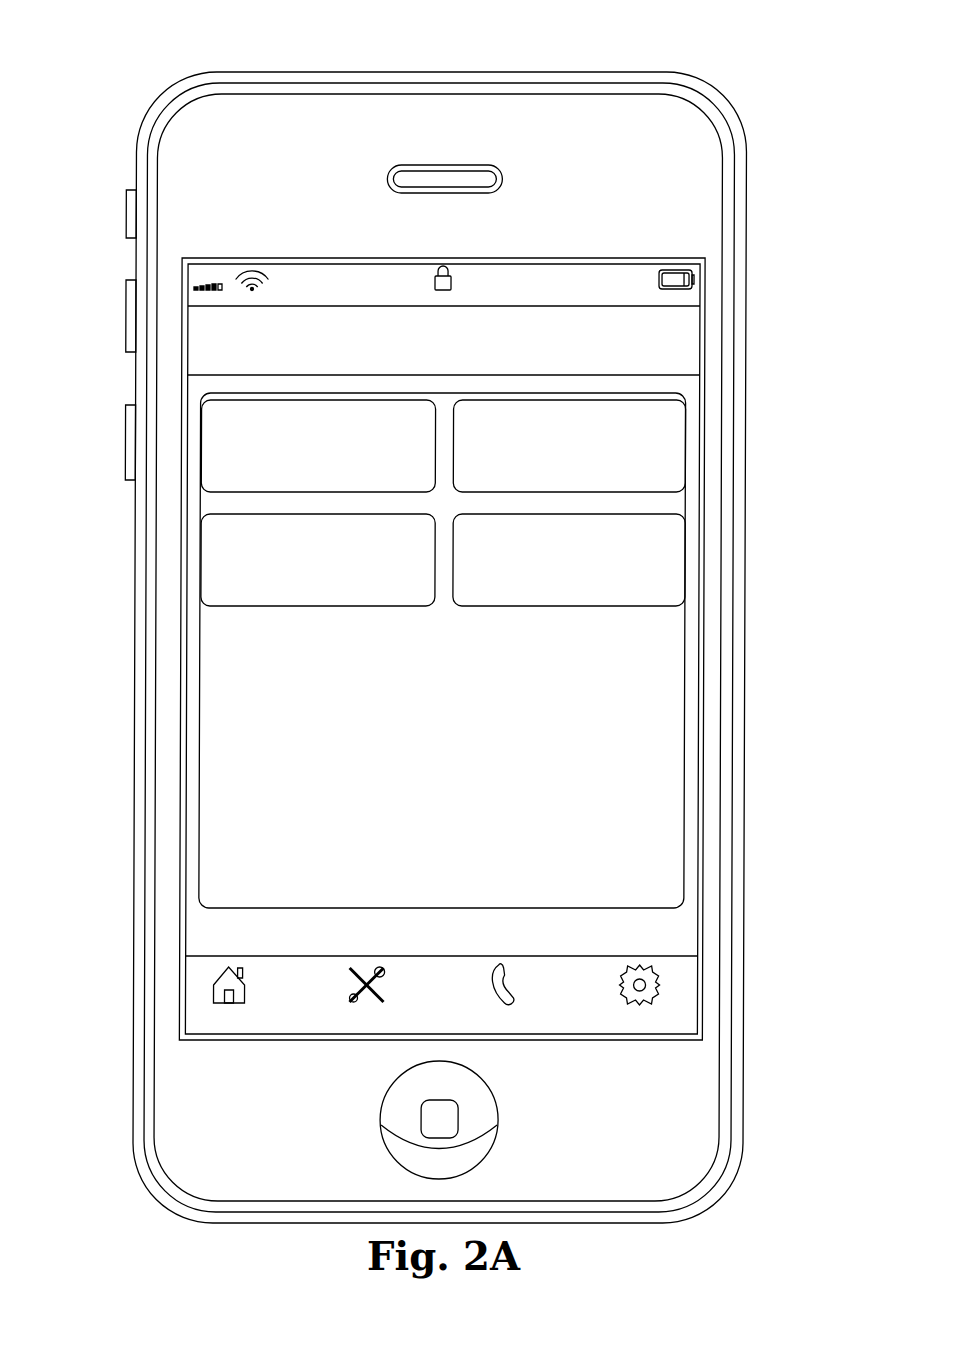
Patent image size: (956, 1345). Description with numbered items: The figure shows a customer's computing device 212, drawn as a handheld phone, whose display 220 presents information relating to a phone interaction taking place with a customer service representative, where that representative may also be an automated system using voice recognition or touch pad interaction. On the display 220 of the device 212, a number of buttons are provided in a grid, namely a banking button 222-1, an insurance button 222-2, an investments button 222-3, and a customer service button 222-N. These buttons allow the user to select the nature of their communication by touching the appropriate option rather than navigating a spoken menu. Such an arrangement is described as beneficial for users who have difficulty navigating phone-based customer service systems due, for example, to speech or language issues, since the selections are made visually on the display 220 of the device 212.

The customer's computing device 212 is at (165, 74).
The display 220 is at (677, 931).
The banking button 222-1 is at (206, 445).
The insurance button 222-2 is at (206, 558).
The investments button 222-3 is at (683, 433).
The customer service button 222-N is at (683, 536).